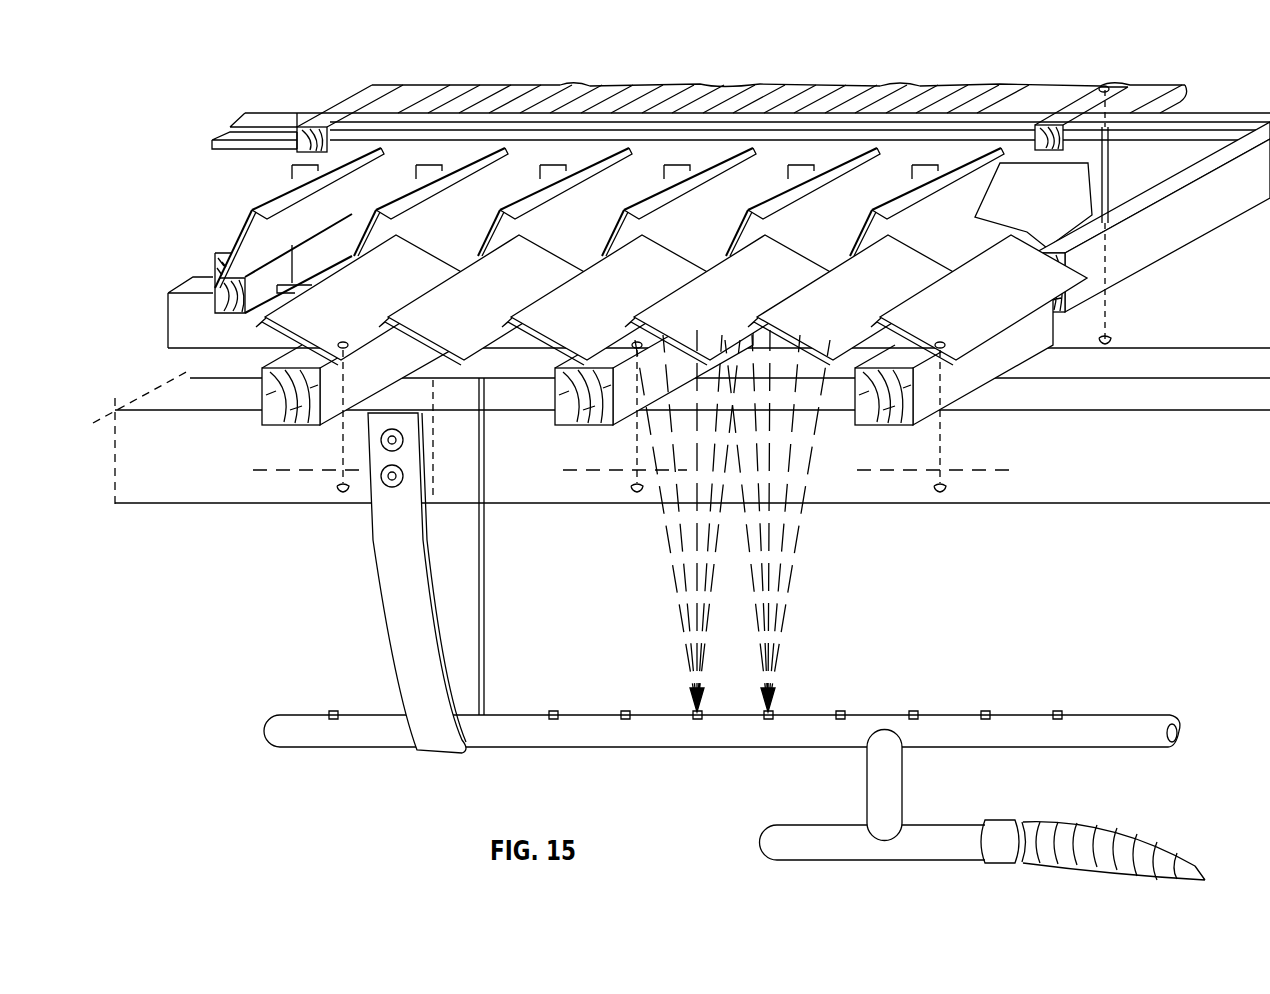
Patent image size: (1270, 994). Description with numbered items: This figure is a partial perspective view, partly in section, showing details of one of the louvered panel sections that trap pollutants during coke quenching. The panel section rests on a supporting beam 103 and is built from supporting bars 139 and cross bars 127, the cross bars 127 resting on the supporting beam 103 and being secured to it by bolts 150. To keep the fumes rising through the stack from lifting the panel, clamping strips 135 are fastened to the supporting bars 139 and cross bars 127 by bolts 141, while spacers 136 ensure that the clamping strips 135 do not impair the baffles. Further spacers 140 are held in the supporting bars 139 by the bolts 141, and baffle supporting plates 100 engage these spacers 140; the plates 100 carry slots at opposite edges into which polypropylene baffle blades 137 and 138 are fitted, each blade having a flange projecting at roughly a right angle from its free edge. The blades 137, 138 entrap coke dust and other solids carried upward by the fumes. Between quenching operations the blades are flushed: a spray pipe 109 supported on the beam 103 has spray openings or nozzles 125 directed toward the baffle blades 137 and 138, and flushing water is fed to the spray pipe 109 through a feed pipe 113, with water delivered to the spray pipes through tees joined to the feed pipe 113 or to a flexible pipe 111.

The baffle supporting plate 100 is at (1033, 205).
The supporting beam 103 is at (153, 493).
The spray pipe 109 is at (697, 740).
The flexible supply hose 111 is at (1147, 852).
The feed pipe 113 is at (933, 813).
The spray openings or nozzles 125 is at (772, 712).
The cross bar 127 is at (1048, 350).
The clamping strip 135 is at (336, 105).
The spacer 136 is at (232, 140).
The baffle blade 137 is at (311, 226).
The baffle blade 138 is at (464, 309).
The supporting bar 139 is at (197, 335).
The spacer 140 is at (1138, 262).
The bolt 141 is at (1109, 185).
The bolt 150 is at (343, 447).